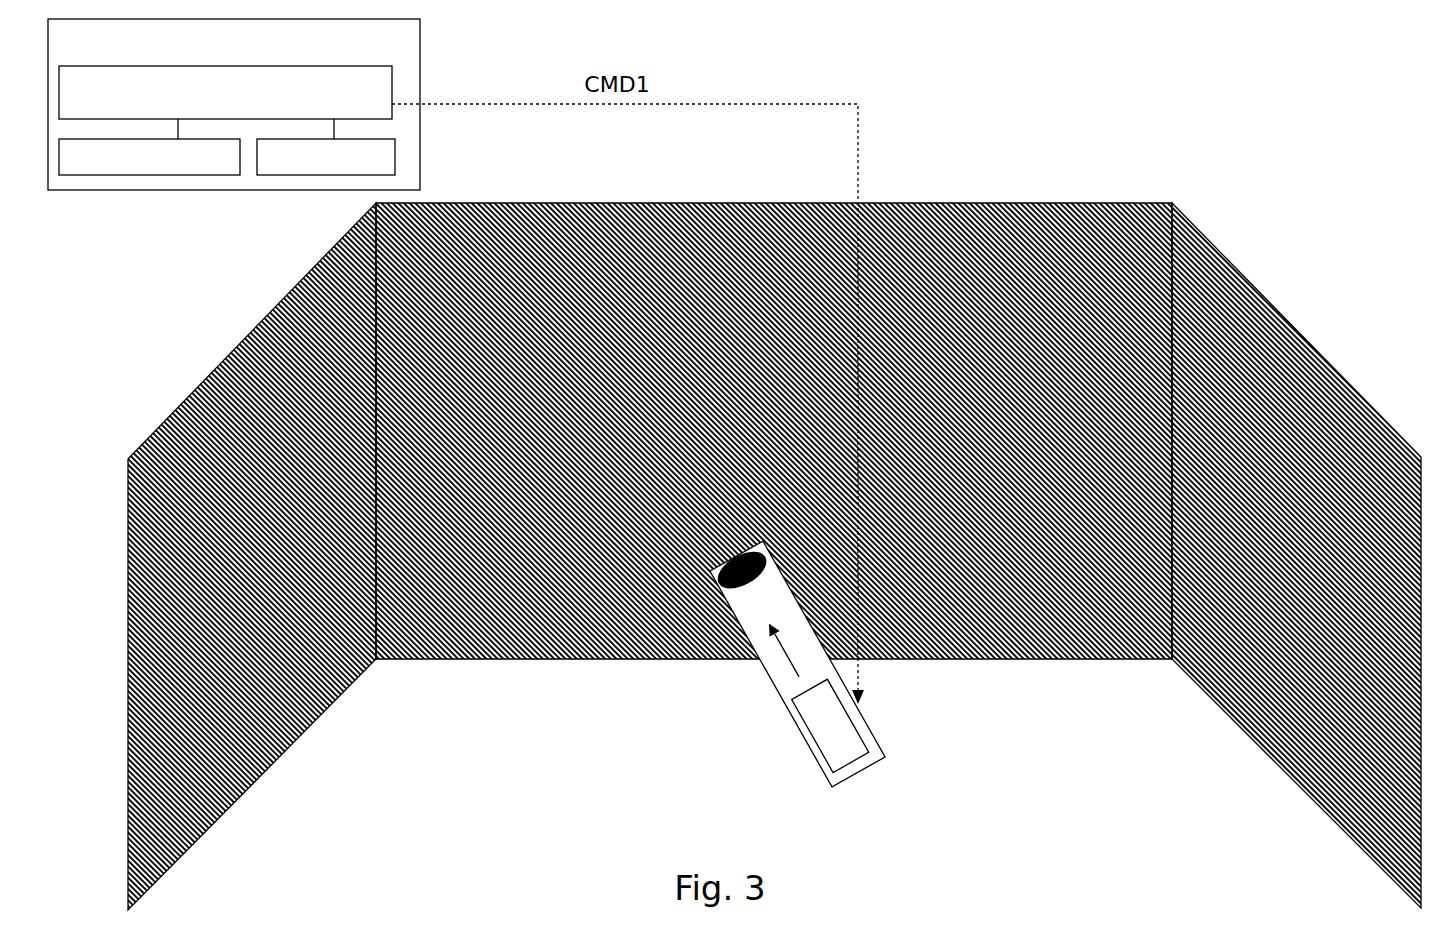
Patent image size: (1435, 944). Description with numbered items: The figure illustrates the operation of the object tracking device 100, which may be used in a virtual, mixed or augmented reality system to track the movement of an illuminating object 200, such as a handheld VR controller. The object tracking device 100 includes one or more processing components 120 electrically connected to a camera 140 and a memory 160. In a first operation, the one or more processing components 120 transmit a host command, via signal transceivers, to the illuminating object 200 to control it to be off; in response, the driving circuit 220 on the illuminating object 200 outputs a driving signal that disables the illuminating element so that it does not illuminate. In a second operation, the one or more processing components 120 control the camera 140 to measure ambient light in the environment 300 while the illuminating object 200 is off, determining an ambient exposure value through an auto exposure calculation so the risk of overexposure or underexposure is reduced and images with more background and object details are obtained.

The object tracking device 100 is at (234, 104).
The processing components 120 is at (225, 92).
The camera 140 is at (326, 157).
The memory 160 is at (149, 157).
The illuminating object 200 is at (836, 671).
The driving circuit 220 is at (833, 725).
The environment 300 is at (1048, 203).